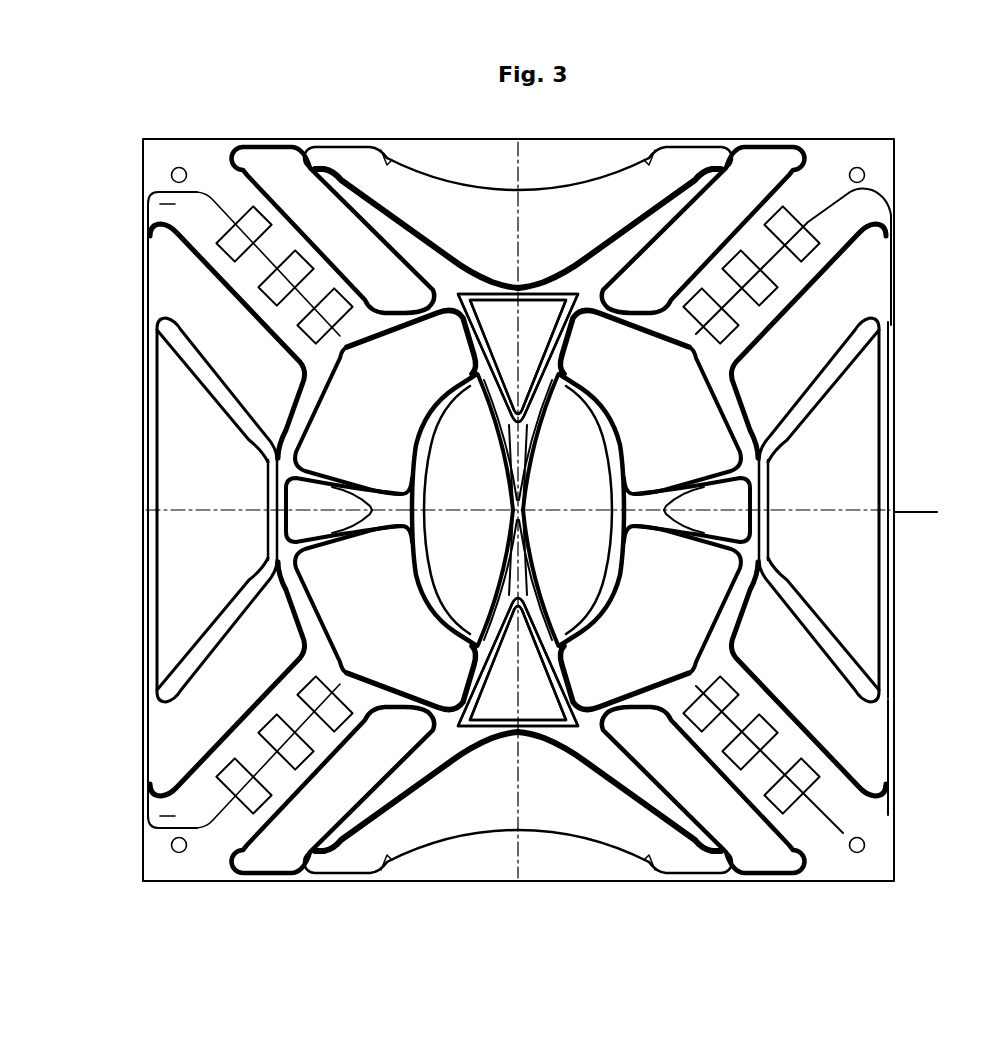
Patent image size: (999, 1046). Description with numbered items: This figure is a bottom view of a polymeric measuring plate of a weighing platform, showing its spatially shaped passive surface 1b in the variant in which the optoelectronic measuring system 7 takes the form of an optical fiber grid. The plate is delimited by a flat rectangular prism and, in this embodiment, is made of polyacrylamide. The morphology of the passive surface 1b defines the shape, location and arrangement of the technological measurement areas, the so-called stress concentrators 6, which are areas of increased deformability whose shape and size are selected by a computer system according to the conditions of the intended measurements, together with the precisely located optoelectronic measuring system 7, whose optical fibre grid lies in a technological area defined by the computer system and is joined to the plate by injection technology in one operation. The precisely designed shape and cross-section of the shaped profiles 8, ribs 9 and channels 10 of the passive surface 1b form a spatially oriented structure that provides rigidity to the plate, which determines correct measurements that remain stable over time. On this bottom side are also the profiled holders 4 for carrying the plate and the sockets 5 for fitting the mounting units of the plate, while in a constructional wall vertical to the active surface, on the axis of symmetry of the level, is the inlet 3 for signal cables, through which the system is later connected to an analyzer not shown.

The passive surface 1b is at (160, 160).
The inlet for signal cables 3 is at (894, 511).
The profiled holders 4 is at (490, 840).
The sockets 5 is at (858, 170).
The stress concentrators 6 is at (787, 280).
The optoelectronic measuring system 7 is at (873, 193).
The shaped profiles 8 is at (765, 533).
The ribs 9 is at (330, 856).
The channels 10 is at (160, 690).